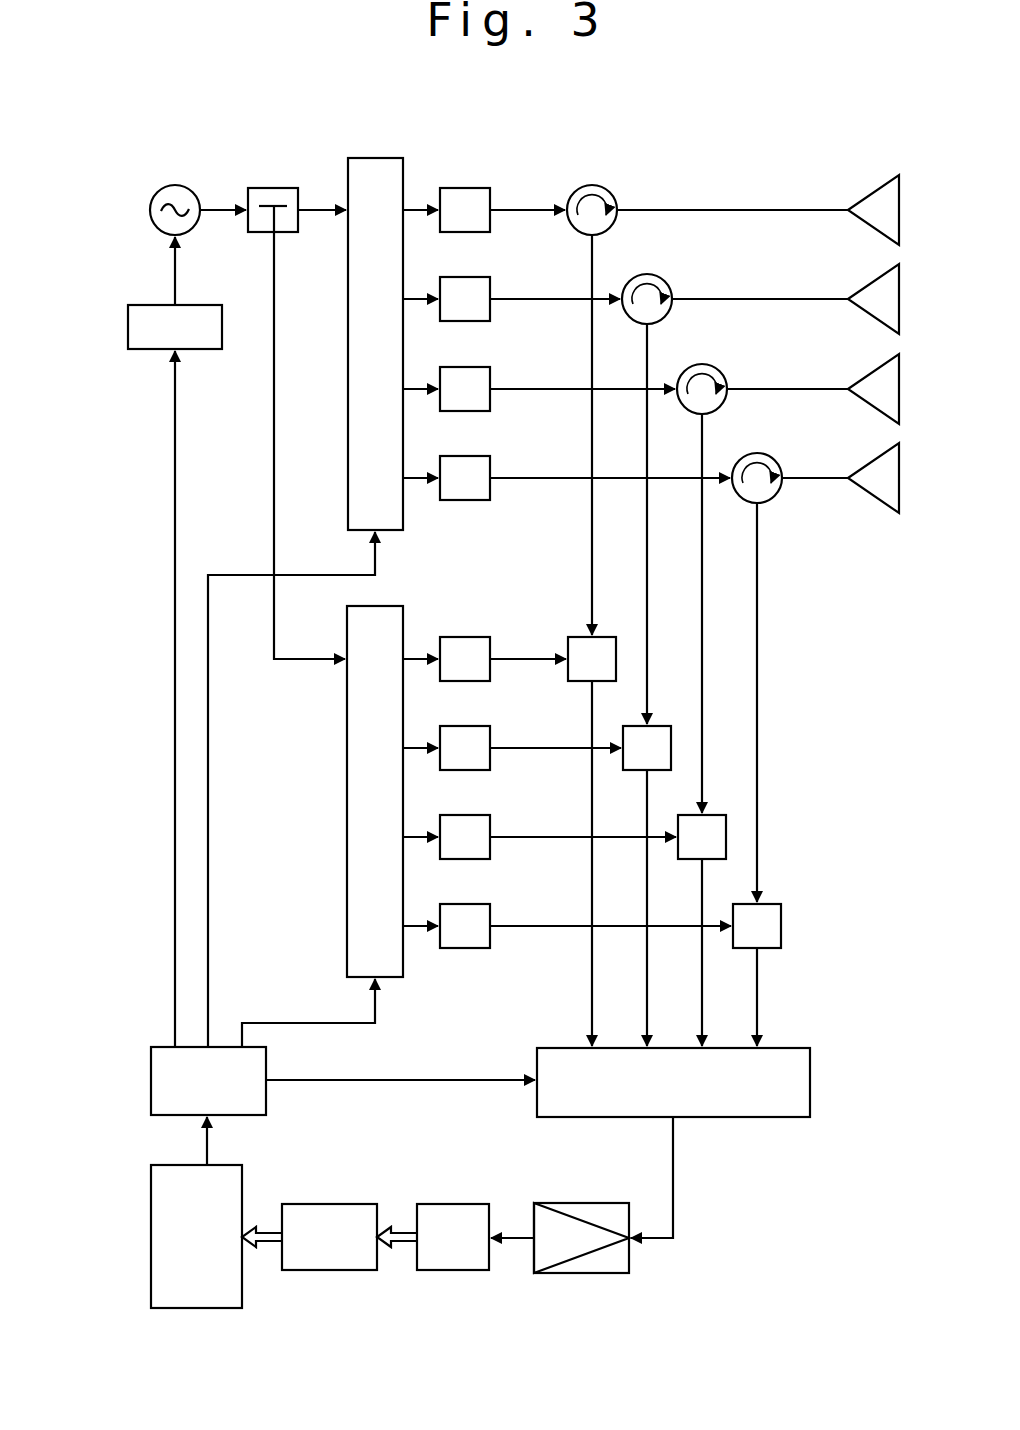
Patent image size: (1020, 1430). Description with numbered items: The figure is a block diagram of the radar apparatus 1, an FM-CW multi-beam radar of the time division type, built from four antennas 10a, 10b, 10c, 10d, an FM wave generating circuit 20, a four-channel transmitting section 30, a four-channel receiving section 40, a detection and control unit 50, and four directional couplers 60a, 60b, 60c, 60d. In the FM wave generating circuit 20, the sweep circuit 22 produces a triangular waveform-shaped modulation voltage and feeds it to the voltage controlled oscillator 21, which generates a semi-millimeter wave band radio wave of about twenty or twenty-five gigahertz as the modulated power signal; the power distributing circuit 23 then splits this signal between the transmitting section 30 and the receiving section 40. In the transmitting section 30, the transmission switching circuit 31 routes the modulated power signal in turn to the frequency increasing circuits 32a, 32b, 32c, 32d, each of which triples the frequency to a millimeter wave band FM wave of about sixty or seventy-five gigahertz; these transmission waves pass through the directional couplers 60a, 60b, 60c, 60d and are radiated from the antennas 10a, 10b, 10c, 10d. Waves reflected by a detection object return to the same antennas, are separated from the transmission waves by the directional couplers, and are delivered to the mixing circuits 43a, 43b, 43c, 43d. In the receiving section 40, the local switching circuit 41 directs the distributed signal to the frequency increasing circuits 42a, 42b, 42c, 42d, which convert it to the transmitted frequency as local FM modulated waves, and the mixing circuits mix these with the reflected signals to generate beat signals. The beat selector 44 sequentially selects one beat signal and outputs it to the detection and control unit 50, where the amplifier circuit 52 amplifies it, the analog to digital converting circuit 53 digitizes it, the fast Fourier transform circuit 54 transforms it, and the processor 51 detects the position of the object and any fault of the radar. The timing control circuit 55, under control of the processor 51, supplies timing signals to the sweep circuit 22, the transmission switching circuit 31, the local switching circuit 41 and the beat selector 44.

The radar apparatus 1 is at (763, 148).
The antenna 10a is at (868, 196).
The antenna 10b is at (868, 285).
The antenna 10c is at (868, 374).
The antenna 10d is at (868, 463).
The FM wave generating circuit 20 is at (236, 106).
The voltage controlled oscillator 21 is at (175, 185).
The sweep circuit 22 is at (128, 327).
The power distributing circuit 23 is at (274, 186).
The transmitting section 30 is at (443, 106).
The transmission switching circuit 31 is at (375, 157).
The frequency increasing circuit 32a is at (463, 187).
The frequency increasing circuit 32b is at (468, 276).
The frequency increasing circuit 32c is at (468, 366).
The frequency increasing circuit 32d is at (468, 455).
The receiving section 40 is at (466, 556).
The local switching circuit 41 is at (384, 606).
The frequency increasing circuit 42a is at (463, 636).
The frequency increasing circuit 42b is at (468, 725).
The frequency increasing circuit 42c is at (468, 814).
The frequency increasing circuit 42d is at (468, 903).
The mixing circuit 43a is at (601, 636).
The mixing circuit 43b is at (656, 725).
The mixing circuit 43c is at (711, 814).
The mixing circuit 43d is at (768, 903).
The beat selector 44 is at (810, 1082).
The detection and control unit 50 is at (416, 1146).
The processor 51 is at (230, 1164).
The amplifier circuit 52 is at (583, 1202).
The analog to digital converting circuit 53 is at (453, 1203).
The fast Fourier transform circuit 54 is at (328, 1203).
The timing control circuit 55 is at (151, 1079).
The directional coupler 60a is at (596, 186).
The directional coupler 60b is at (651, 275).
The directional coupler 60c is at (706, 365).
The directional coupler 60d is at (761, 454).